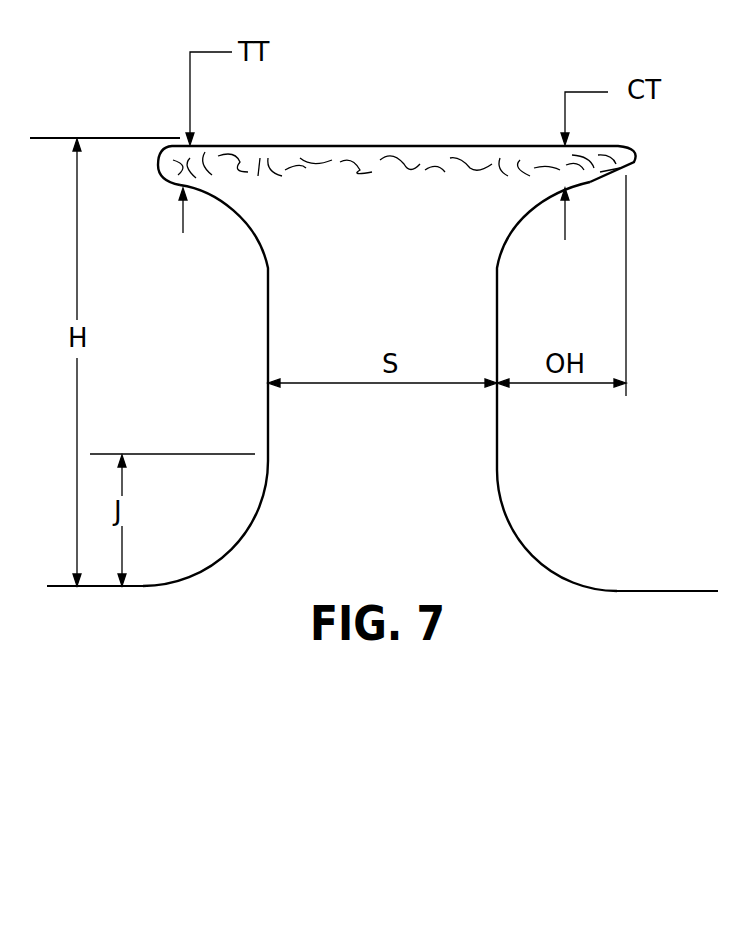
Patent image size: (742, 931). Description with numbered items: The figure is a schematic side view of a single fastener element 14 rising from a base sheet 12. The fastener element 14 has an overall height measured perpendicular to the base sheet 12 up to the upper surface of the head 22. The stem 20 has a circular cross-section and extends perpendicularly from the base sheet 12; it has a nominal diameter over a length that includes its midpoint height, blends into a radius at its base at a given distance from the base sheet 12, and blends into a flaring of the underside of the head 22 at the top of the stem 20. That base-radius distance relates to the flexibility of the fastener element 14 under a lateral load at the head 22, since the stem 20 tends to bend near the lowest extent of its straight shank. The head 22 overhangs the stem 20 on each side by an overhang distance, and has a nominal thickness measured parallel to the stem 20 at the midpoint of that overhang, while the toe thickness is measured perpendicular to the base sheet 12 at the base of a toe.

The base sheet 12 is at (618, 585).
The fastener element 14 is at (389, 309).
The stem 20 is at (268, 333).
The head 22 is at (284, 133).